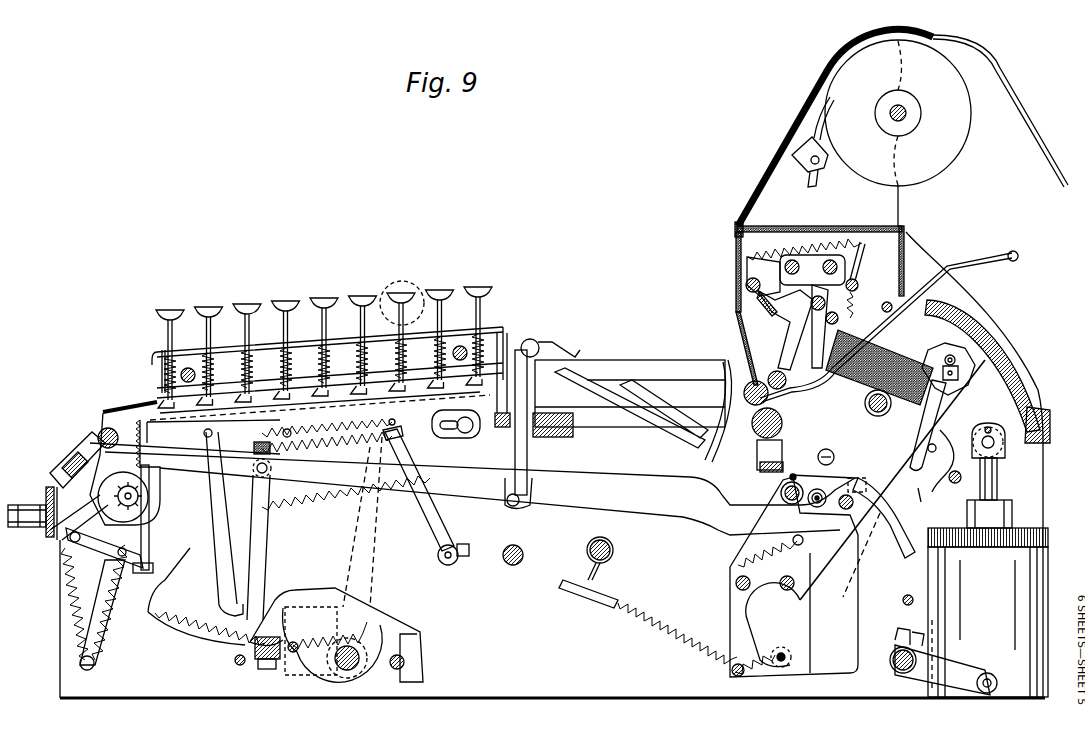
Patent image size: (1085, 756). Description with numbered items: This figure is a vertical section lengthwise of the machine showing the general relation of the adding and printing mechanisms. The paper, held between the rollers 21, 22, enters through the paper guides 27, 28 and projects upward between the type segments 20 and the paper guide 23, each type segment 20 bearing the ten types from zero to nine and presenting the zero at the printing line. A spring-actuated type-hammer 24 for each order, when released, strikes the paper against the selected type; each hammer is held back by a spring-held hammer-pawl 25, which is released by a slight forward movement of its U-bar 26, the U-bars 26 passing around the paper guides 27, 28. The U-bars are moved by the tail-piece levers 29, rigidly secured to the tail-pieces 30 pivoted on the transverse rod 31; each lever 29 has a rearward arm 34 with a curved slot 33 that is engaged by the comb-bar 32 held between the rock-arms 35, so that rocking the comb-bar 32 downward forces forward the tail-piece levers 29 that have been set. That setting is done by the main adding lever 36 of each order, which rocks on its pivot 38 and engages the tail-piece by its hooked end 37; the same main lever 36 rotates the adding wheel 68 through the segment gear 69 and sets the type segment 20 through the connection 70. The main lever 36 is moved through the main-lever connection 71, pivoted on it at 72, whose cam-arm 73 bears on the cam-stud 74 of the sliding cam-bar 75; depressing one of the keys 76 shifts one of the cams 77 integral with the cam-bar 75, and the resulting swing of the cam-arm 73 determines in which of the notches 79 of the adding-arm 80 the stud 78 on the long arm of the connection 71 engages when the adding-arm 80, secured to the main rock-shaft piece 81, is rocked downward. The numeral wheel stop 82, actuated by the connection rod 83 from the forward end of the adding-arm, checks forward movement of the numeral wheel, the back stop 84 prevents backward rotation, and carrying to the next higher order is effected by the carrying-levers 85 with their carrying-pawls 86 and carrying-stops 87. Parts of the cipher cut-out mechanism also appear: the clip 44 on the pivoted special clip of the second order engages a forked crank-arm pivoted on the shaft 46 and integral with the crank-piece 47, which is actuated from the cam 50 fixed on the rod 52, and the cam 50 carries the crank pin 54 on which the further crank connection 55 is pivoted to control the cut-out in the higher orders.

The type segment 20 is at (722, 395).
The roller 21 is at (772, 378).
The roller 22 is at (758, 440).
The paper guide 23 is at (737, 345).
The type-hammer 24 is at (785, 330).
The hammer-pawl 25 is at (826, 300).
The U-bar 26 is at (848, 345).
The paper guide 27 is at (884, 311).
The paper guide 28 is at (978, 262).
The tail-piece lever 29 is at (975, 432).
The tail-piece 30 is at (800, 638).
The transverse rod 31 is at (775, 650).
The comb-bar 32 is at (902, 431).
The curved slot 33 is at (938, 488).
The arm 34 is at (918, 503).
The rock-arm 35 is at (928, 425).
The main adding lever 36 is at (480, 493).
The hooked end 37 is at (825, 678).
The pivot 38 is at (840, 498).
The clip 44 is at (908, 565).
The shaft 46 is at (838, 462).
The crank-piece 47 is at (862, 480).
The cam 50 is at (945, 350).
The rod 52 is at (970, 394).
The crank pin 54 is at (956, 360).
The crank connection 55 is at (960, 372).
The adding wheel 68 is at (125, 469).
The segment gear 69 is at (104, 432).
The connection 70 is at (528, 447).
The main-lever connection 71 is at (262, 523).
The pivot 72 is at (259, 476).
The cam-arm 73 is at (300, 447).
The cam-stud 74 is at (260, 440).
The sliding cam-bar 75 is at (388, 401).
The keys 76 is at (205, 333).
The cams 77 is at (432, 398).
The stud 78 is at (240, 665).
The notches 79 is at (206, 602).
The adding-arm 80 is at (310, 590).
The main rock-shaft piece 81 is at (285, 660).
The numeral wheel stop 82 is at (185, 428).
The connection rod 83 is at (212, 497).
The back stop 84 is at (150, 538).
The carrying-levers 85 is at (105, 545).
The carrying-pawls 86 is at (90, 470).
The carrying-stops 87 is at (62, 543).